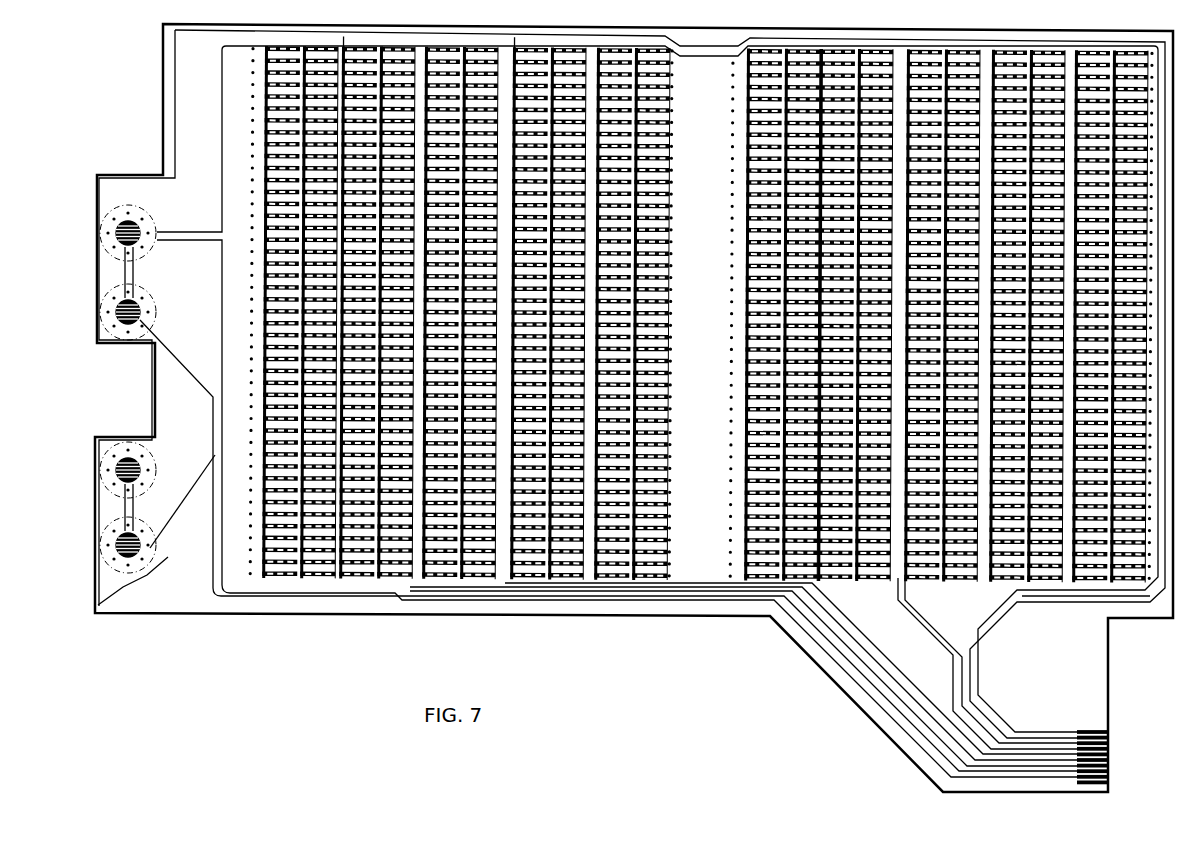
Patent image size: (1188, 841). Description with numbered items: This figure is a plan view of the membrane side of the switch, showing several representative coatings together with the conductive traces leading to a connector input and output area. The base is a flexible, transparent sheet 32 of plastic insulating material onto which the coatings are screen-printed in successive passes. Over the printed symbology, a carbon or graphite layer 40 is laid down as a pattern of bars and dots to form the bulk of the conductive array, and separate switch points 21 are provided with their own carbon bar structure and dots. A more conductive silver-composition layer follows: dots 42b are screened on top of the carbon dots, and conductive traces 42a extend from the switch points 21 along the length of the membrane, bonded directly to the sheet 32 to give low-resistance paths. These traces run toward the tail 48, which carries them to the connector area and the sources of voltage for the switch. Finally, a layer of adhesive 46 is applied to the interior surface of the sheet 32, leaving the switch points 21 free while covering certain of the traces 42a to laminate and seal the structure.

The layer of adhesive 46 is at (187, 103).
The switch points 21 is at (112, 308).
The conductive traces 42a is at (187, 365).
The dots 42b is at (151, 494).
The sheet of plastic insulating material 32 is at (162, 598).
The carbon conductive layer 40 is at (315, 580).
The tail 48 is at (1136, 694).